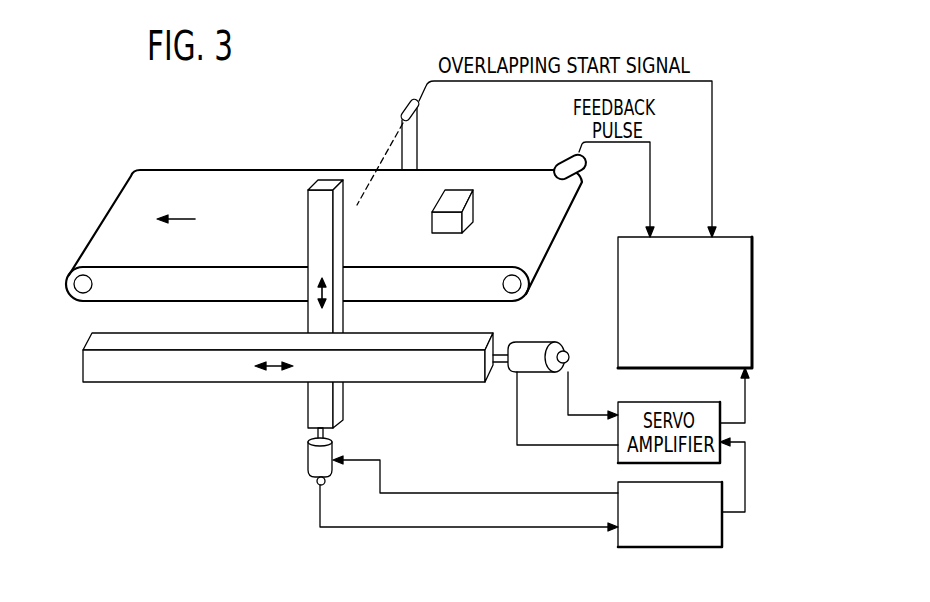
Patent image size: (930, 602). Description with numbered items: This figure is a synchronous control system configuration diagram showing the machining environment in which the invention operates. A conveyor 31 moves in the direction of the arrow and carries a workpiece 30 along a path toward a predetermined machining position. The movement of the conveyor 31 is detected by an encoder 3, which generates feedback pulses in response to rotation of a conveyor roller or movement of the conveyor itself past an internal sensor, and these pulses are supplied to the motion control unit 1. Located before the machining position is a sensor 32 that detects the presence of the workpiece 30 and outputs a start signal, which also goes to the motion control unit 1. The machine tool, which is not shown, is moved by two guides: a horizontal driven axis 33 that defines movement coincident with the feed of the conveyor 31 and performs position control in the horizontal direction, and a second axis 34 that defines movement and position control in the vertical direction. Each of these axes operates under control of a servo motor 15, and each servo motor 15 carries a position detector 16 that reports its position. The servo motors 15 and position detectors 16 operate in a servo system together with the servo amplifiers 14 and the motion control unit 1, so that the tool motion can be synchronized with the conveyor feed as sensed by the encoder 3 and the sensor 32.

The motion control unit 1 is at (752, 258).
The encoder 3 is at (569, 152).
The servo amplifier 14 is at (722, 530).
The servo motor 15 is at (308, 458).
The position detector 16 is at (317, 485).
The workpiece 30 is at (473, 211).
The conveyor 31 is at (162, 183).
The sensor 32 is at (402, 108).
The guide 33 is at (120, 370).
The guide 34 is at (342, 395).